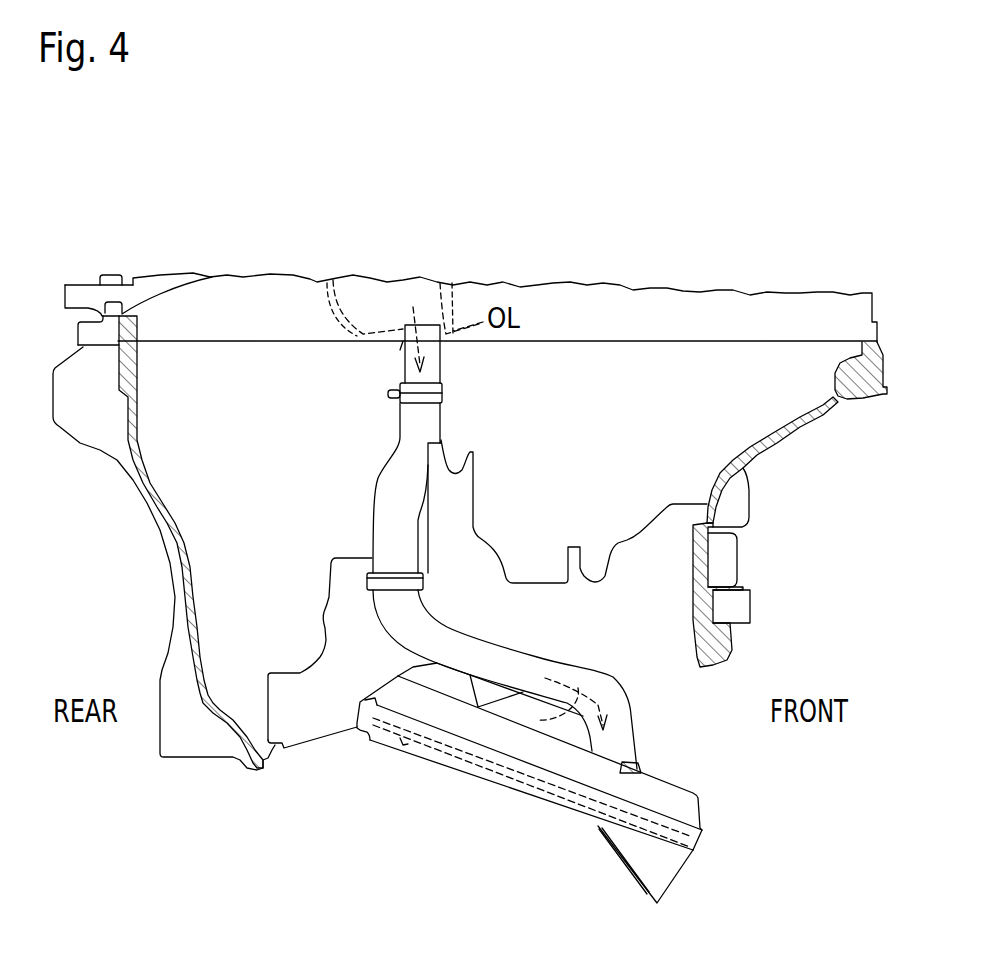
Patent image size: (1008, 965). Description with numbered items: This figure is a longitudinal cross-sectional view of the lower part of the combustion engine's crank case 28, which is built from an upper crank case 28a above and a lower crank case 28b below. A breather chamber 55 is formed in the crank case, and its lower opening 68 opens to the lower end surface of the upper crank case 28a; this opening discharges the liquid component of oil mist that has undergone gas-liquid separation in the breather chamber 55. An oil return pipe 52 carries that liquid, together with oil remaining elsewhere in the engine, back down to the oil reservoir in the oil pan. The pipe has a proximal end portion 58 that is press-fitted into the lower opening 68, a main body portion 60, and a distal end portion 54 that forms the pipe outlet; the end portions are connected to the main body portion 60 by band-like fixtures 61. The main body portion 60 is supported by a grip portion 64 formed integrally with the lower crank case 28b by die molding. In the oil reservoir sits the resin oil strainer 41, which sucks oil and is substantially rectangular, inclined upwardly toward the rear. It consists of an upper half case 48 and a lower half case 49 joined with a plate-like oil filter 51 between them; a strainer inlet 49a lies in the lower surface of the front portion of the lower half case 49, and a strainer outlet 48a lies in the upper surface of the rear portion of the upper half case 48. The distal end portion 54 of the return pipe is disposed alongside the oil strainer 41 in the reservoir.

The crank case 28 is at (220, 212).
The upper crank case 28a is at (78, 304).
The lower crank case 28b is at (68, 398).
The oil strainer 41 is at (706, 794).
The upper half case 48 is at (360, 733).
The strainer outlet 48a is at (413, 667).
The lower half case 49 is at (378, 750).
The strainer inlet 49a is at (680, 893).
The oil filter 51 is at (505, 780).
The oil return pipe 52 is at (636, 698).
The distal end portion 54 is at (638, 887).
The breather chamber 55 is at (392, 297).
The proximal end portion 58 is at (433, 370).
The main body portion 60 is at (553, 670).
The fixture 61 is at (438, 393).
The grip portion 64 is at (395, 583).
The lower opening 68 is at (402, 348).